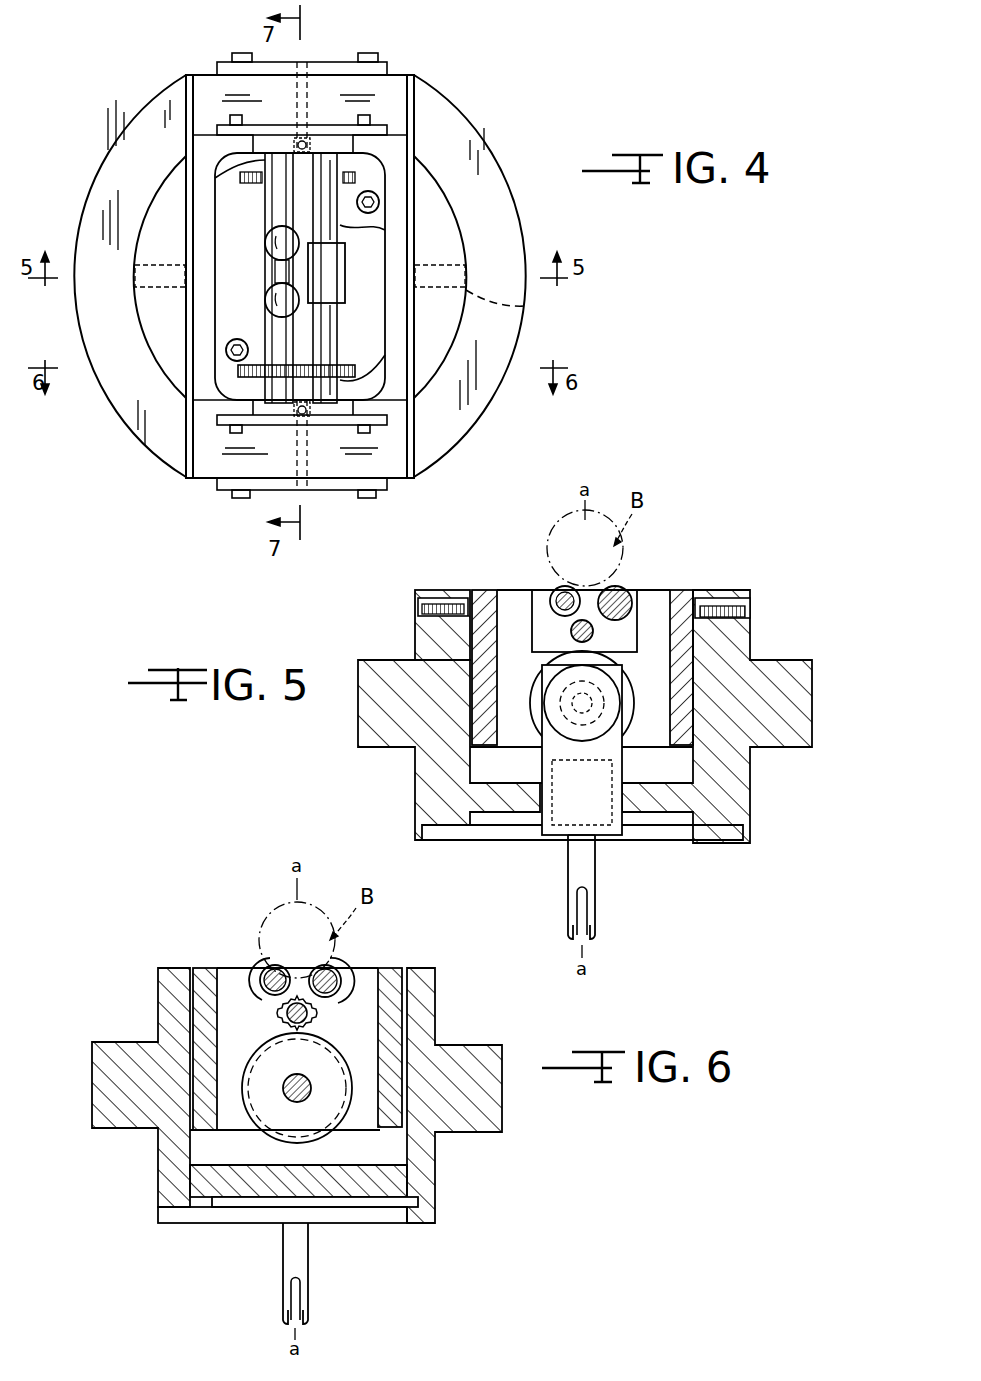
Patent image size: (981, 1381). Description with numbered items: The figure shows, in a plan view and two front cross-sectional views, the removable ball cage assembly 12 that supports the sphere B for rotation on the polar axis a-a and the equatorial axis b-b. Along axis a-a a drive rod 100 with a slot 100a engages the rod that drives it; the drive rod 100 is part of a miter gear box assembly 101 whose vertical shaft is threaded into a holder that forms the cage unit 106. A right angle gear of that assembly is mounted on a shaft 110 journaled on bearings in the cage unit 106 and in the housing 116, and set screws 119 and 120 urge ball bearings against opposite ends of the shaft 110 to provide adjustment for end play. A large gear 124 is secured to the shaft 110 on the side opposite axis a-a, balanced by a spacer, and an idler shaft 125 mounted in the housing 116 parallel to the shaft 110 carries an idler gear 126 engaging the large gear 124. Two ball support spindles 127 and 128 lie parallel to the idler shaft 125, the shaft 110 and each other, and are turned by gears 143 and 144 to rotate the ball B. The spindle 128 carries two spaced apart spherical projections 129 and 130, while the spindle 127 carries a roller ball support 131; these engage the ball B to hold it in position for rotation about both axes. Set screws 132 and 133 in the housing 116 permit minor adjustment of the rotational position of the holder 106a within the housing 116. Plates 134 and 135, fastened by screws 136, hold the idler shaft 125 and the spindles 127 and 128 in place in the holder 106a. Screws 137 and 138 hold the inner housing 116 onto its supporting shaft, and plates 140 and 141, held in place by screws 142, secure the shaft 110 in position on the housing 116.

In FIG. 4, the ball cage assembly 12 is at (508, 143).
In FIG. 5, the ball cage assembly 12 is at (760, 636).
In FIG. 6, the ball cage assembly 12 is at (515, 1050).
In FIG. 5, the drive rod 100 is at (583, 867).
In FIG. 6, the drive rod 100 is at (290, 1246).
In FIG. 5, the slot 100a is at (585, 922).
In FIG. 6, the slot 100a is at (304, 1298).
In FIG. 5, the miter gear box assembly 101 is at (518, 760).
In FIG. 6, the miter gear box assembly 101 is at (238, 1050).
In FIG. 6, the cage unit 106 is at (390, 1062).
In FIG. 5, the holder 106a is at (482, 636).
In FIG. 6, the shaft 110 is at (290, 1100).
In FIG. 4, the housing 116 is at (495, 335).
In FIG. 5, the housing 116 is at (372, 710).
In FIG. 6, the housing 116 is at (468, 1128).
In FIG. 4, the set screw 119 is at (303, 478).
In FIG. 4, the set screw 120 is at (310, 66).
In FIG. 6, the large gear 124 is at (325, 1068).
In FIG. 5, the idler shaft 125 is at (566, 588).
In FIG. 6, the idler shaft 125 is at (306, 1015).
In FIG. 6, the idler gear 126 is at (320, 1010).
In FIG. 4, the ball support spindle 127 is at (350, 178).
In FIG. 5, the ball support spindle 127 is at (622, 590).
In FIG. 6, the ball support spindle 127 is at (337, 967).
In FIG. 4, the ball support spindle 128 is at (280, 167).
In FIG. 5, the ball support spindle 128 is at (552, 596).
In FIG. 6, the ball support spindle 128 is at (264, 968).
In FIG. 4, the spherical projection 129 is at (265, 243).
In FIG. 4, the spherical projection 130 is at (266, 300).
In FIG. 4, the roller ball support 131 is at (345, 300).
In FIG. 4, the set screw 132 is at (517, 304).
In FIG. 5, the set screw 132 is at (730, 600).
In FIG. 4, the set screw 133 is at (160, 288).
In FIG. 5, the set screw 133 is at (448, 600).
In FIG. 4, the plate 134 is at (270, 132).
In FIG. 4, the plate 135 is at (345, 420).
In FIG. 4, the screws 136 is at (232, 118).
In FIG. 4, the screw 137 is at (380, 203).
In FIG. 4, the screw 138 is at (227, 357).
In FIG. 4, the plate 140 is at (260, 492).
In FIG. 4, the plate 141 is at (340, 62).
In FIG. 4, the screws 142 is at (242, 53).
In FIG. 6, the gear 143 is at (350, 976).
In FIG. 6, the gear 144 is at (258, 990).